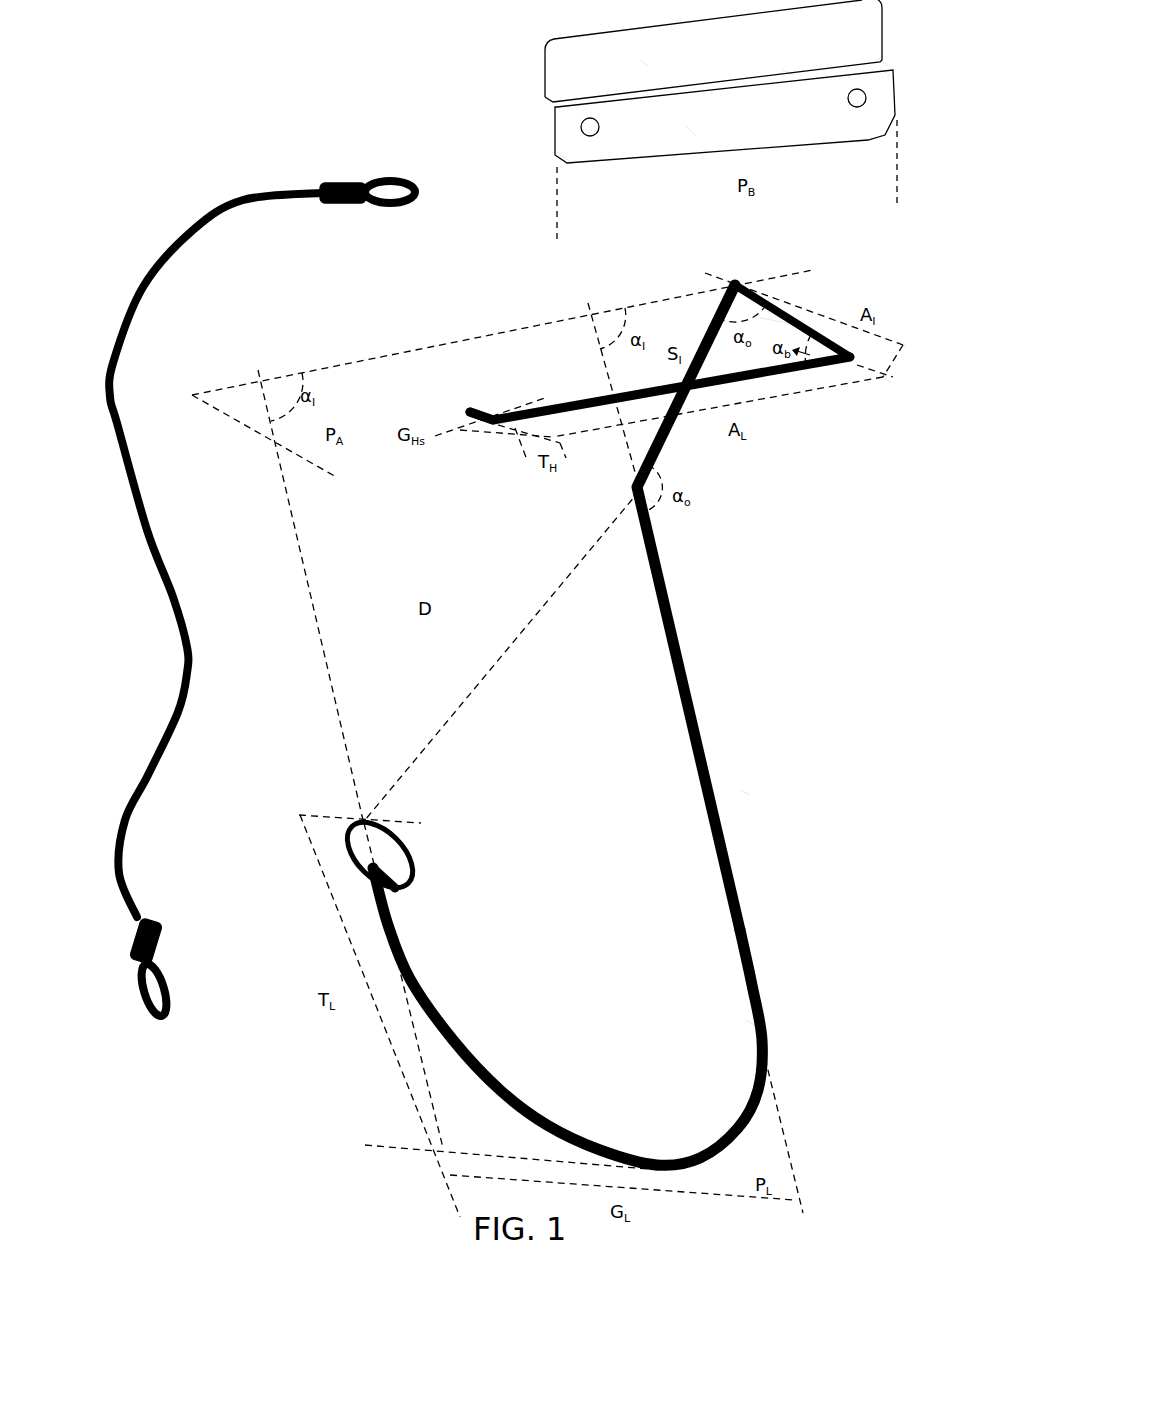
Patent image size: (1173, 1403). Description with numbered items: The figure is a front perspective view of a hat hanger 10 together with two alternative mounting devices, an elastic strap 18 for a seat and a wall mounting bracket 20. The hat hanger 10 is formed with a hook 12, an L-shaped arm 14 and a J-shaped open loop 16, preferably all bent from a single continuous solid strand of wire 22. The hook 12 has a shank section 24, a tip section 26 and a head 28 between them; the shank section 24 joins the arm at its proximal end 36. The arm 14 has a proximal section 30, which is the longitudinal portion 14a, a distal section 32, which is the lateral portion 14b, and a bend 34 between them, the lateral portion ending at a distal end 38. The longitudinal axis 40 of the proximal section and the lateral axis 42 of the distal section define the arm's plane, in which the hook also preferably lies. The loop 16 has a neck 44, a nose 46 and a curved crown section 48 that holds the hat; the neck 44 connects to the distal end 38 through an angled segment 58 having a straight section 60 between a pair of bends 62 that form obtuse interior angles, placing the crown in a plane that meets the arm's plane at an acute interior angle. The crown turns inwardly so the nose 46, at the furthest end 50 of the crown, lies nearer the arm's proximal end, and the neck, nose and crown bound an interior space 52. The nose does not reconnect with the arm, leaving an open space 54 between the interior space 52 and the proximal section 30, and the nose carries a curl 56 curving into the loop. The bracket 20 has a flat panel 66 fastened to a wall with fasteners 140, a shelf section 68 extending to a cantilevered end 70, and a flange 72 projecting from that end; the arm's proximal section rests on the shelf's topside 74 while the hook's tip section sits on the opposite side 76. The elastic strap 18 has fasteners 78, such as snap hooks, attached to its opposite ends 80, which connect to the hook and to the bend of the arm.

The hat hanger 10 is at (900, 680).
The hook 12 is at (484, 411).
The L-shaped arm 14 is at (767, 373).
The longitudinal portion of the arm 14a is at (645, 397).
The lateral portion of the arm 14b is at (803, 327).
The J-shaped open loop 16 is at (740, 912).
The elastic strap 18 is at (156, 176).
The wall mounting bracket 20 is at (908, 144).
The wire 22 is at (473, 1067).
The shank section 24 is at (497, 425).
The tip section 26 is at (488, 407).
The head 28 is at (478, 418).
The proximal section 30 is at (648, 387).
The distal section 32 is at (780, 302).
The bend 34 is at (853, 358).
The proximal end 36 is at (548, 410).
The distal end 38 is at (743, 283).
The longitudinal axis 40 is at (903, 343).
The lateral axis 42 is at (887, 380).
The neck 44 is at (695, 715).
The nose 46 is at (357, 828).
The curved crown section 48 is at (547, 1125).
The furthest end of the crown 50 is at (357, 868).
The interior space 52 is at (700, 1000).
The open space 54 is at (537, 663).
The curl 56 is at (392, 881).
The angled segment 58 is at (662, 392).
The straight section 60 is at (708, 382).
The bends 62 is at (735, 282).
The flat panel 66 is at (788, 72).
The shelf section 68 is at (690, 130).
The cantilevered end 70 is at (565, 158).
The flange 72 is at (643, 63).
The topside of the shelf section 74 is at (883, 62).
The opposite side of the shelf section 76 is at (885, 72).
The fasteners 78 is at (382, 177).
The opposite ends of the strap 80 is at (313, 188).
The fasteners 140 is at (866, 100).